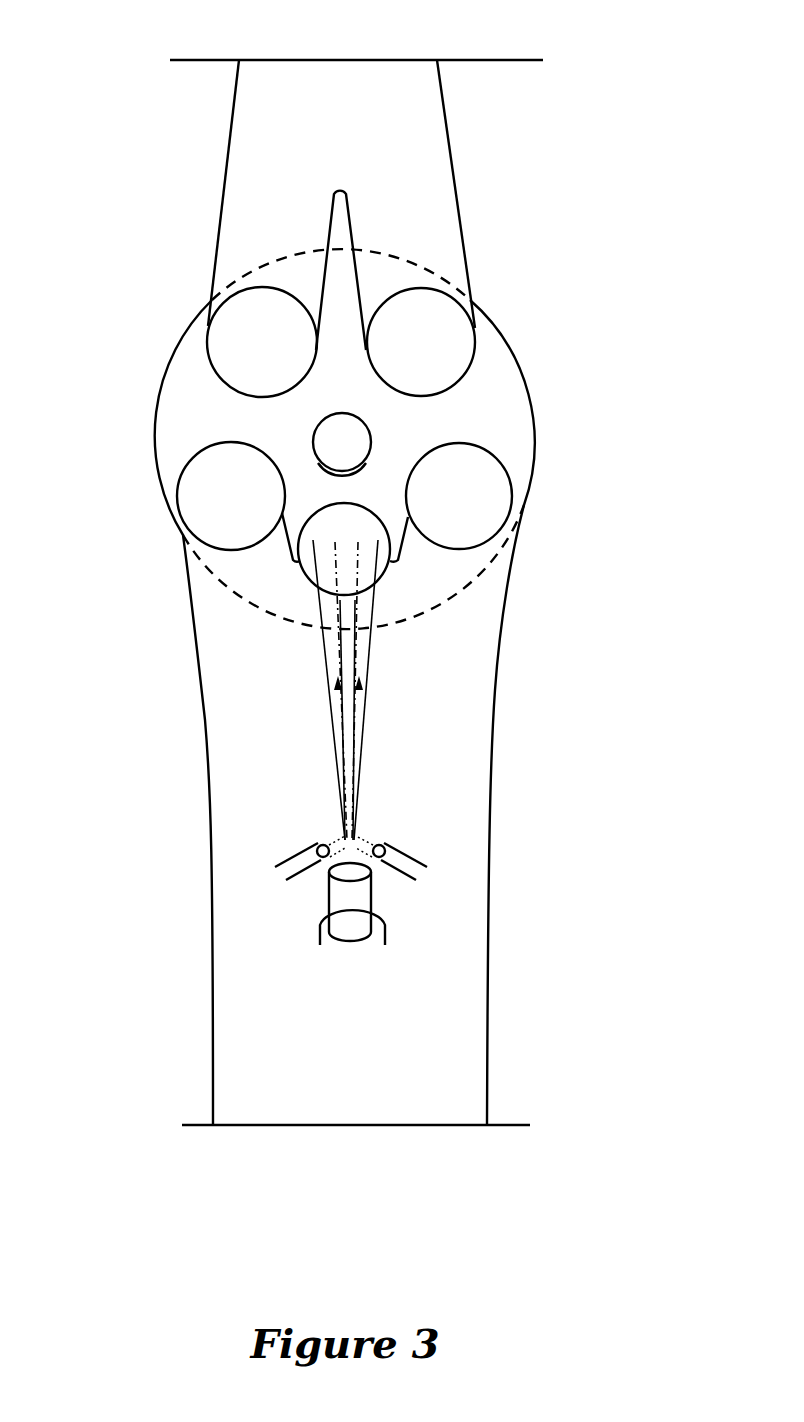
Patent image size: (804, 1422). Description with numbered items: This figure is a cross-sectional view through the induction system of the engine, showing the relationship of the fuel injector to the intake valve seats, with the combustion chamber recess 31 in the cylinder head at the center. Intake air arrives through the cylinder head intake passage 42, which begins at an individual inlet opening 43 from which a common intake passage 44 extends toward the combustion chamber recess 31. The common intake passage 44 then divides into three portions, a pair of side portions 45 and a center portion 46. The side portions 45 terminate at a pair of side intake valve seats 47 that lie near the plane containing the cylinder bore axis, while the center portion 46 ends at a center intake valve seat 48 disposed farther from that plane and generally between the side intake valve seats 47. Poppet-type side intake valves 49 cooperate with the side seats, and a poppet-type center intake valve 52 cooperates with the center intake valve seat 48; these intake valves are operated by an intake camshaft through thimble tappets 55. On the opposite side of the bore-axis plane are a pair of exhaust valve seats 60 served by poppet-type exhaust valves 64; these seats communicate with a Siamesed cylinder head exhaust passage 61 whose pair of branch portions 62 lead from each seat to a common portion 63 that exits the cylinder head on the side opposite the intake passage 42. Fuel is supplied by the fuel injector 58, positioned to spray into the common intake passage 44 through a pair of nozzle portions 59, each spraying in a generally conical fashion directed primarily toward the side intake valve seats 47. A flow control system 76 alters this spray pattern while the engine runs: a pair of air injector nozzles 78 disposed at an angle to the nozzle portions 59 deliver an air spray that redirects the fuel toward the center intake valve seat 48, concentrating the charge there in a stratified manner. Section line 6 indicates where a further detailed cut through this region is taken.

The section line 6 is at (150, 897).
The recess 31 is at (176, 432).
The cylinder head intake passage 42 is at (482, 854).
The inlet opening 43 is at (485, 1080).
The common intake passage 44 is at (470, 773).
The side portion 45 is at (243, 585).
The center portion 46 is at (397, 600).
The side intake valve seat 47 is at (205, 541).
The center intake valve seat 48 is at (367, 513).
The side intake valve 49 is at (211, 487).
The center intake valve 52 is at (332, 517).
The thimble tappet 55 is at (362, 429).
The fuel injector 58 is at (360, 912).
The nozzle portion 59 is at (310, 872).
The exhaust valve seat 60 is at (213, 304).
The cylinder head exhaust passage 61 is at (246, 135).
The branch portion 62 is at (248, 201).
The common portion 63 is at (438, 86).
The exhaust valve 64 is at (233, 357).
The flow control system 76 is at (402, 818).
The air injector nozzle 78 is at (283, 842).